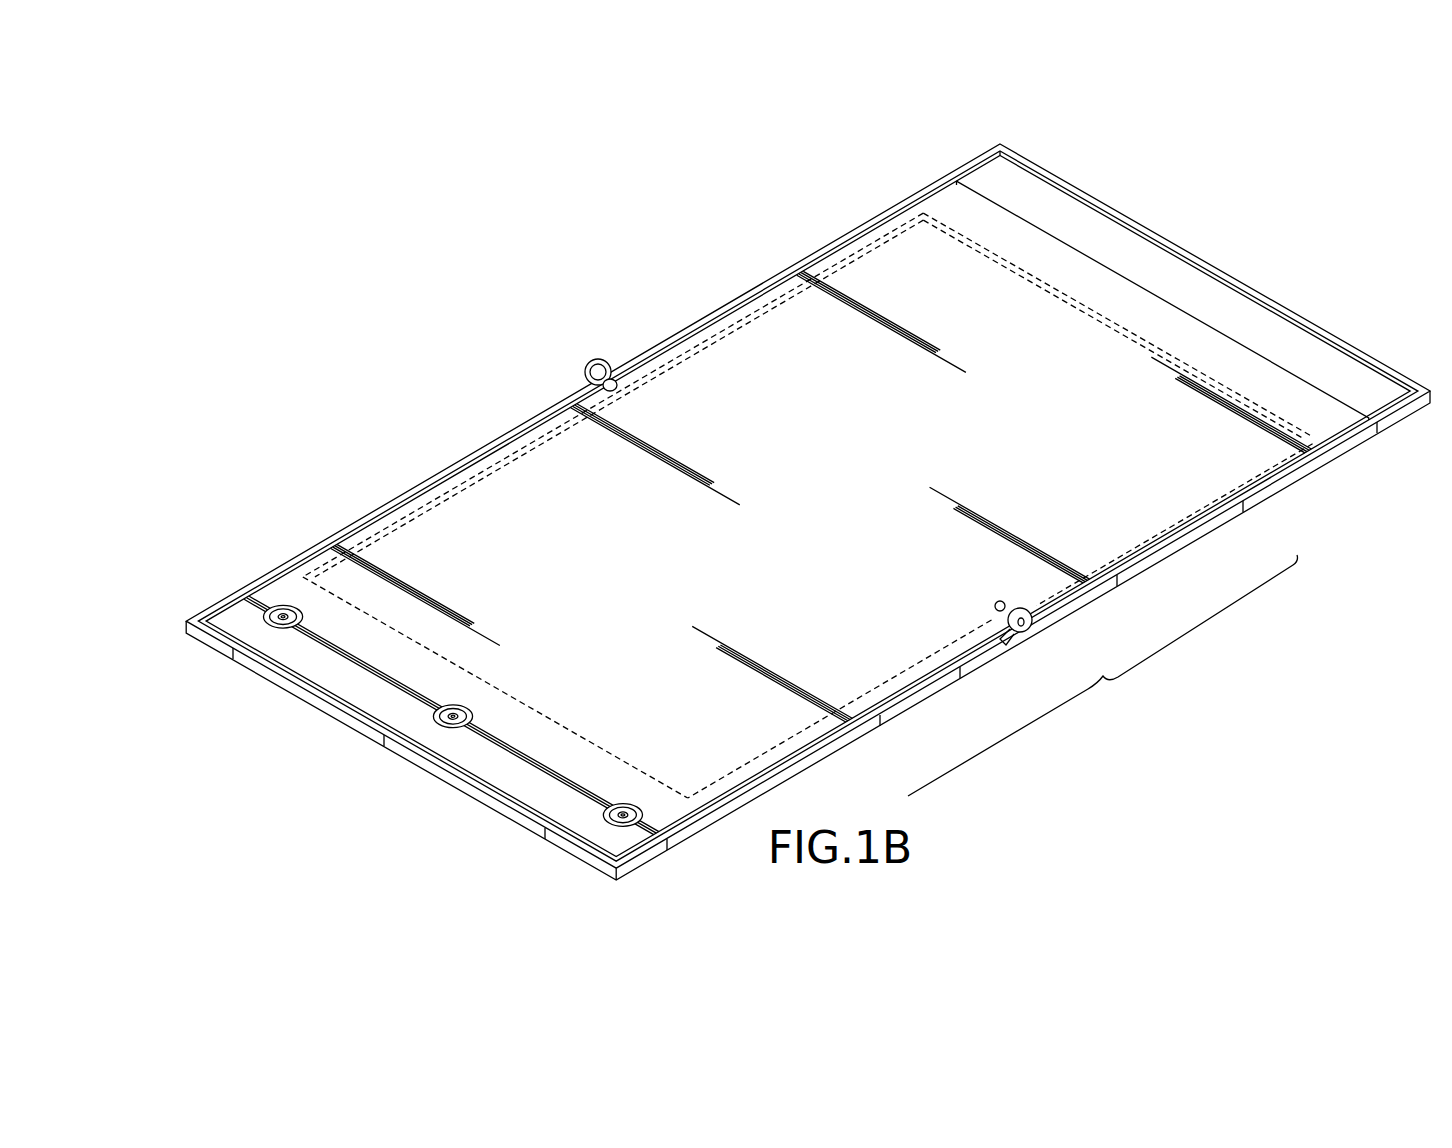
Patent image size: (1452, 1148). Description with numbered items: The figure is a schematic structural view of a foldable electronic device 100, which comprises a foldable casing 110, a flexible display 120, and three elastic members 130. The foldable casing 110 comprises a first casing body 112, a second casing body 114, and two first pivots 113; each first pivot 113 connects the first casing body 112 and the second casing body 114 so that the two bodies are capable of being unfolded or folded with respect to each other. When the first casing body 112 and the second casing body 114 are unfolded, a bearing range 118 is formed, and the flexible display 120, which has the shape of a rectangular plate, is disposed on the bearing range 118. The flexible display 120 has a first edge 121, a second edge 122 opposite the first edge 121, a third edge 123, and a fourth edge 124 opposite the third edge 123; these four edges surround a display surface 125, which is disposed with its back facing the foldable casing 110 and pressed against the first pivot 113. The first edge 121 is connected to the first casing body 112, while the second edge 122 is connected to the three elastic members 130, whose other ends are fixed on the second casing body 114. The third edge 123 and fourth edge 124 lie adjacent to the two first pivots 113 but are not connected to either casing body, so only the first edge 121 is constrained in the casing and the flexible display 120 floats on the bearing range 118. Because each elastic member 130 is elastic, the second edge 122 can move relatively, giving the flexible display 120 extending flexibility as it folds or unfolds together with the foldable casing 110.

The foldable electronic device 100 is at (1203, 769).
The foldable casing 110 is at (808, 504).
The first casing body 112 is at (1233, 521).
The first pivot 113 is at (600, 362).
The second casing body 114 is at (880, 735).
The bearing range 118 is at (1013, 196).
The flexible display 120 is at (548, 448).
The first edge 121 is at (1290, 360).
The second edge 122 is at (550, 786).
The third edge 123 is at (1299, 481).
The fourth edge 124 is at (878, 214).
The display surface 125 is at (1117, 360).
The elastic member 130 is at (264, 615).